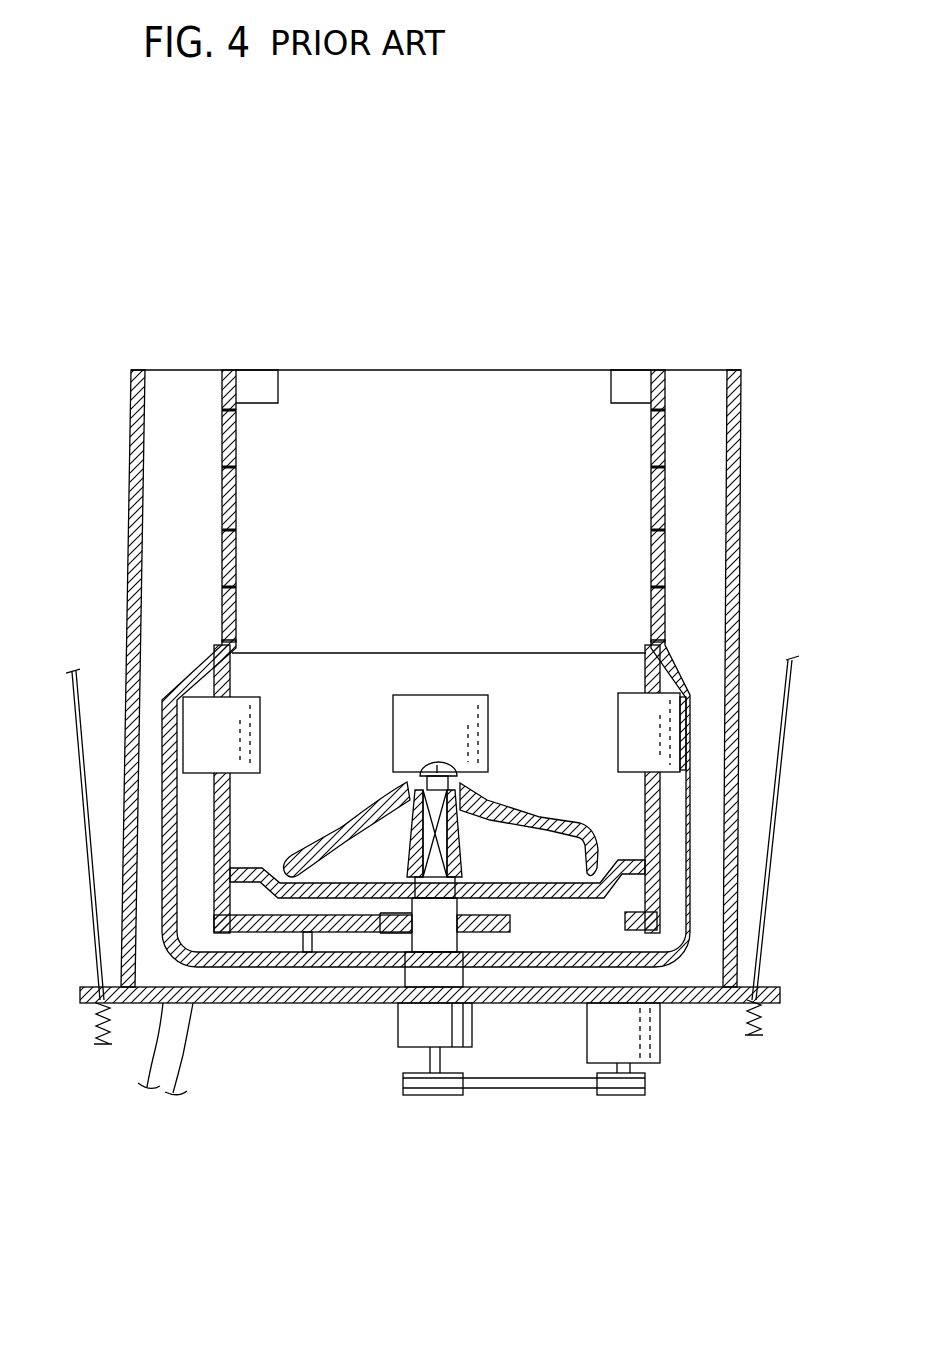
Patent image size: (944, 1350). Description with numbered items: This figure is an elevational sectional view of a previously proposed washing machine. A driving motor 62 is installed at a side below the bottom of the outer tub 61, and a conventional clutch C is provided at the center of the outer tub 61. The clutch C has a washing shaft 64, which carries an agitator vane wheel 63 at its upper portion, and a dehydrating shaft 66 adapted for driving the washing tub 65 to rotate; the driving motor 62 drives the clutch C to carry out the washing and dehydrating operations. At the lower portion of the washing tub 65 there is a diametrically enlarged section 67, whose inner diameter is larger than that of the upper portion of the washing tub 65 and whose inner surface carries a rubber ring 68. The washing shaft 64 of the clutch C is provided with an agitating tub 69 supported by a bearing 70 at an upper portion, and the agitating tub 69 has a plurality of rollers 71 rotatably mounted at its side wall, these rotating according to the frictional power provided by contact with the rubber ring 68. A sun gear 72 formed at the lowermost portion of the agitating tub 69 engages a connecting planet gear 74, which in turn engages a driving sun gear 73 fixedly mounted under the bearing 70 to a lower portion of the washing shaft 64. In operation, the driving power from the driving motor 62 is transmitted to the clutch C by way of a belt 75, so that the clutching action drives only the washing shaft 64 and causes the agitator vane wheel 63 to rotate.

The outer tub 61 is at (131, 497).
The washing tub 65 is at (667, 502).
The diametrically enlarged section 67 is at (700, 885).
The agitating tub 69 is at (215, 866).
The rollers 71 is at (663, 700).
The rubber ring 68 is at (700, 735).
The agitator vane wheel 63 is at (513, 805).
The bearing 70 is at (400, 877).
The connecting planet gear 74 is at (283, 908).
The driving sun gear 73 is at (372, 935).
The washing shaft 64 is at (412, 933).
The dehydrating shaft 66 is at (420, 972).
The clutch C is at (423, 1022).
The belt 75 is at (495, 1086).
The driving motor 62 is at (602, 1040).
The sun gear 72 is at (673, 967).